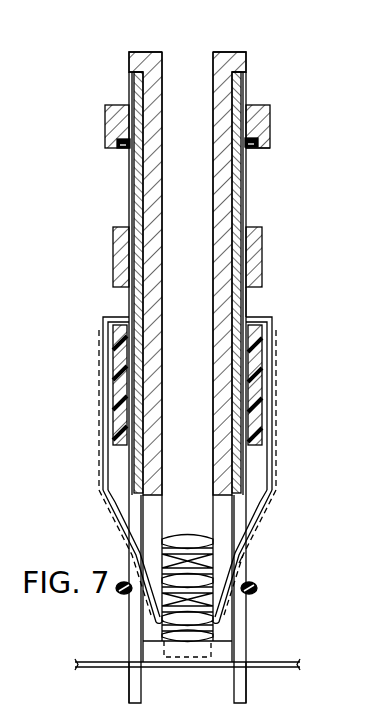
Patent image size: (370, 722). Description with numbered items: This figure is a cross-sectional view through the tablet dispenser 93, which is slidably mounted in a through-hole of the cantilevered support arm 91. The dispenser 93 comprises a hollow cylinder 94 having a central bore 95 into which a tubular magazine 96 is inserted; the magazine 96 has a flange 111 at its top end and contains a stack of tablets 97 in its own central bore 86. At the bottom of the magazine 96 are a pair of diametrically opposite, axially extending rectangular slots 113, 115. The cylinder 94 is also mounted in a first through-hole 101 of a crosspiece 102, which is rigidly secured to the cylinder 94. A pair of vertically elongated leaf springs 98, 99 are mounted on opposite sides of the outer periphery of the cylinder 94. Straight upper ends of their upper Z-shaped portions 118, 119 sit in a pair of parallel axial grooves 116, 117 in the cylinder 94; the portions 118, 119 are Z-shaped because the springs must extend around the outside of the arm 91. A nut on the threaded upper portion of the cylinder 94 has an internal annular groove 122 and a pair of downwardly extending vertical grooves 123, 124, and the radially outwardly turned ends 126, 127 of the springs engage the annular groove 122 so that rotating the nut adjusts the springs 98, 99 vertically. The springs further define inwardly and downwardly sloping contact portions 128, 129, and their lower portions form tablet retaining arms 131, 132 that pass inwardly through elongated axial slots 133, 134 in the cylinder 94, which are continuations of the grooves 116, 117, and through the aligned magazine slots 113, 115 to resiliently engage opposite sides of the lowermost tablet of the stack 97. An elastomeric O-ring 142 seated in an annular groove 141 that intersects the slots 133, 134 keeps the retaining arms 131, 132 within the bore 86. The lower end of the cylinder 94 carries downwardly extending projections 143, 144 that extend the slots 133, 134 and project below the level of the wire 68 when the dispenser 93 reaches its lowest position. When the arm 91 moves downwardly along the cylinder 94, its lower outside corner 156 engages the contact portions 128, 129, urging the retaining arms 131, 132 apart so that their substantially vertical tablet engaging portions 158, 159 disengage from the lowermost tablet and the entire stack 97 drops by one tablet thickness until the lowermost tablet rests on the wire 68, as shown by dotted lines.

The wire 68 is at (290, 662).
The central bore 86 is at (213, 62).
The cantilevered support arm 91 is at (268, 345).
The tablet dispenser 93 is at (247, 72).
The hollow cylinder 94 is at (245, 185).
The central bore 95 is at (230, 88).
The tubular magazine 96 is at (157, 77).
The stack of tablets 97 is at (200, 533).
The leaf spring 98 is at (103, 447).
The leaf spring 99 is at (263, 400).
The first through-hole 101 is at (247, 308).
The crosspiece 102 is at (262, 257).
The flange 111 is at (130, 59).
The rectangular slot 113 is at (153, 513).
The rectangular slot 115 is at (219, 512).
The axial groove 116 is at (129, 90).
The axial groove 117 is at (248, 92).
The upper Z-shaped portion 118 is at (129, 200).
The upper Z-shaped portion 119 is at (247, 210).
The internal annular groove 122 is at (272, 138).
The vertical groove 123 is at (118, 148).
The vertical groove 124 is at (263, 150).
The radially outwardly turned end 126 is at (112, 128).
The radially outwardly turned end 127 is at (265, 125).
The contact portion 128 is at (110, 495).
The contact portion 129 is at (258, 497).
The tablet retaining arm 131 is at (140, 593).
The tablet retaining arm 132 is at (247, 573).
The axial slot 133 is at (133, 538).
The axial slot 134 is at (242, 568).
The annular groove 141 is at (240, 597).
The elastomeric O-ring 142 is at (256, 588).
The downwardly extending projection 143 is at (132, 684).
The downwardly extending projection 144 is at (240, 684).
The lower outside corner 156 is at (265, 450).
The tablet engaging portion 158 is at (157, 625).
The tablet engaging portion 159 is at (222, 625).